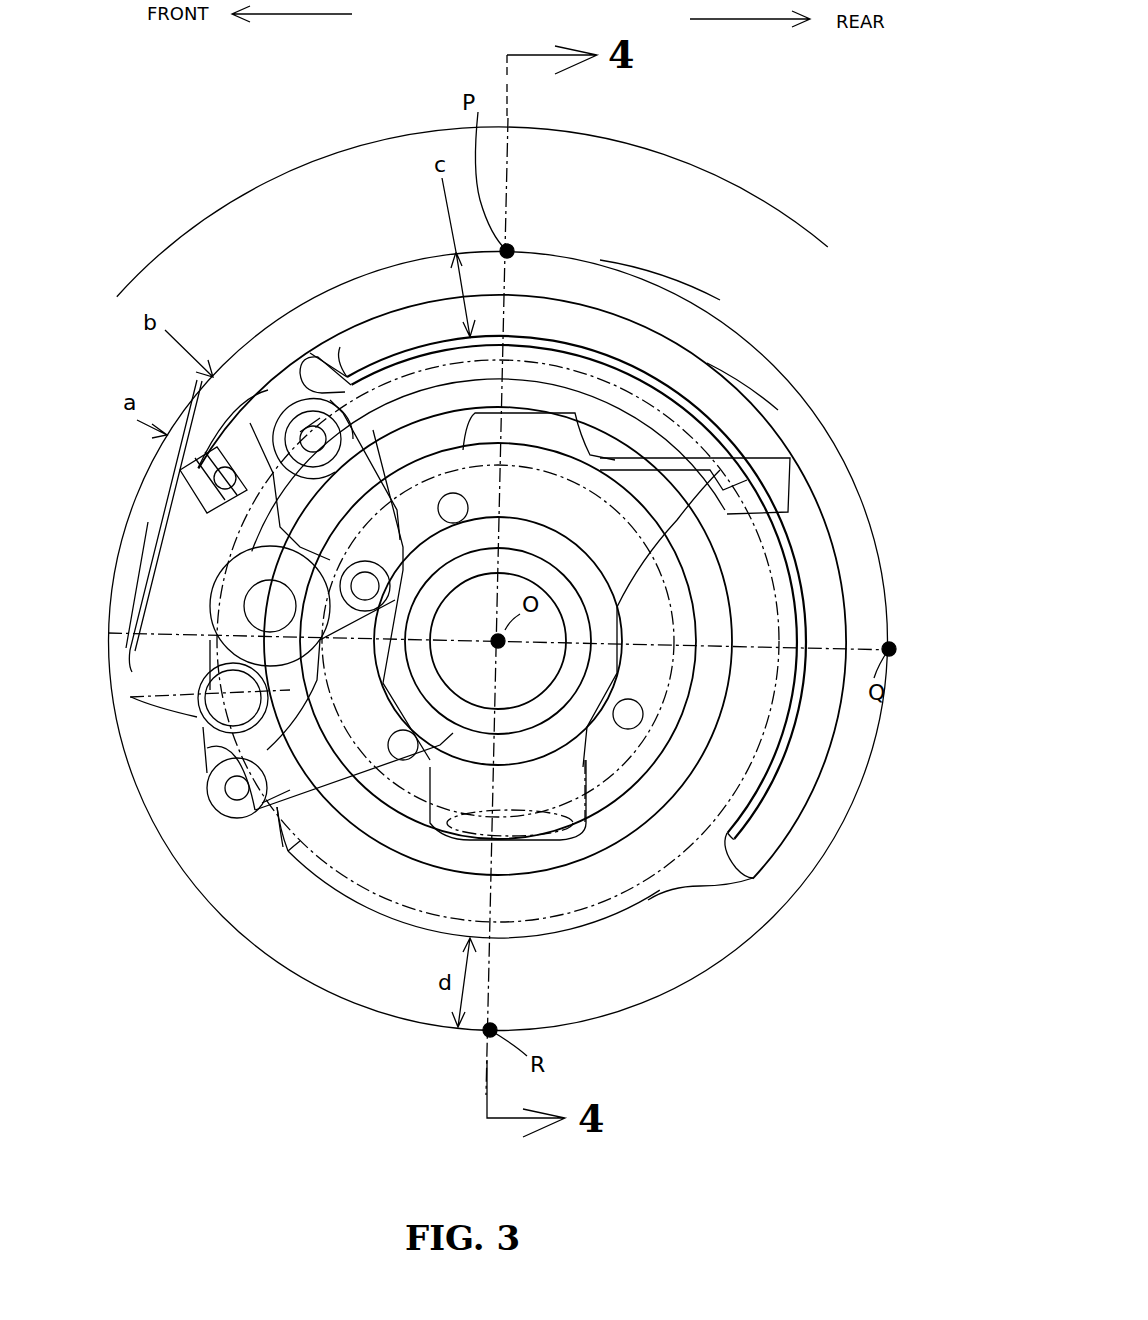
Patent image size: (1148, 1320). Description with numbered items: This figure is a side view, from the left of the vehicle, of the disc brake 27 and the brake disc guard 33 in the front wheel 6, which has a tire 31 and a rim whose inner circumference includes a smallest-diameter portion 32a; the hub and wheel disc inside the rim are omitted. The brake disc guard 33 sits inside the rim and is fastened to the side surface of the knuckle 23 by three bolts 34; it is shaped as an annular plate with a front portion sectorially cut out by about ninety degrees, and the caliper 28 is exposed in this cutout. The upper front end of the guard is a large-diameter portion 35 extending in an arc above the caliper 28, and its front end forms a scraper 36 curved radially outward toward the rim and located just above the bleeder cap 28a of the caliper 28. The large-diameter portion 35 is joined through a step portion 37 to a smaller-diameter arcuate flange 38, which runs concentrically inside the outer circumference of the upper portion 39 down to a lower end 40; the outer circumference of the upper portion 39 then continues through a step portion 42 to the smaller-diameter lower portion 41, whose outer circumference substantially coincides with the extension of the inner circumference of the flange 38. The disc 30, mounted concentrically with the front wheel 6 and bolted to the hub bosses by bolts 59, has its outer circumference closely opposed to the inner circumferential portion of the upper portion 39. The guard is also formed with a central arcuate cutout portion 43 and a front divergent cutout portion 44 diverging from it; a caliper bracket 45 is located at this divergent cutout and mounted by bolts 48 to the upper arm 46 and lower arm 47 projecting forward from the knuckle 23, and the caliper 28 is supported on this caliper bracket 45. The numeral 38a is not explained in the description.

The front wheel 6 is at (197, 147).
The knuckle 23 is at (643, 430).
The disc brake 27 is at (183, 628).
The caliper 28 is at (165, 537).
The bleeder cap 28a is at (180, 480).
The disc 30 is at (583, 910).
The tire 31 is at (295, 160).
The smallest-diameter portion 32a is at (614, 266).
The brake disc guard 33 is at (795, 416).
The bolts 34 is at (458, 505).
The large-diameter portion 35 is at (255, 394).
The scraper 36 is at (197, 462).
The step portion 37 is at (340, 347).
The flange 38 is at (533, 340).
The shoe web step 38a is at (800, 457).
The upper portion 39 is at (707, 363).
The lower end 40 is at (753, 878).
The lower portion 41 is at (543, 930).
The step portion 42 is at (693, 887).
The central arcuate cutout portion 43 is at (553, 720).
The front divergent cutout portion 44 is at (310, 437).
The caliper bracket 45 is at (207, 748).
The upper arm 46 is at (310, 353).
The lower arm 47 is at (133, 697).
The bolts 48 is at (295, 395).
The bolts 59 is at (470, 695).